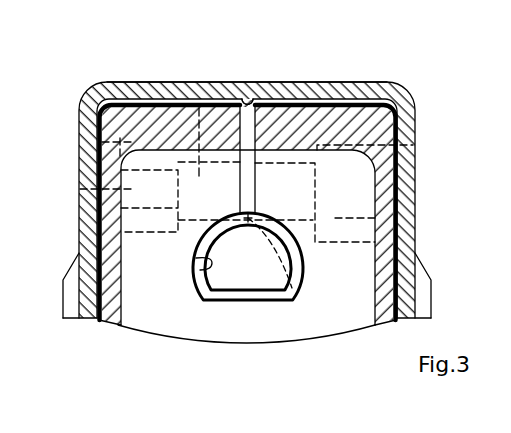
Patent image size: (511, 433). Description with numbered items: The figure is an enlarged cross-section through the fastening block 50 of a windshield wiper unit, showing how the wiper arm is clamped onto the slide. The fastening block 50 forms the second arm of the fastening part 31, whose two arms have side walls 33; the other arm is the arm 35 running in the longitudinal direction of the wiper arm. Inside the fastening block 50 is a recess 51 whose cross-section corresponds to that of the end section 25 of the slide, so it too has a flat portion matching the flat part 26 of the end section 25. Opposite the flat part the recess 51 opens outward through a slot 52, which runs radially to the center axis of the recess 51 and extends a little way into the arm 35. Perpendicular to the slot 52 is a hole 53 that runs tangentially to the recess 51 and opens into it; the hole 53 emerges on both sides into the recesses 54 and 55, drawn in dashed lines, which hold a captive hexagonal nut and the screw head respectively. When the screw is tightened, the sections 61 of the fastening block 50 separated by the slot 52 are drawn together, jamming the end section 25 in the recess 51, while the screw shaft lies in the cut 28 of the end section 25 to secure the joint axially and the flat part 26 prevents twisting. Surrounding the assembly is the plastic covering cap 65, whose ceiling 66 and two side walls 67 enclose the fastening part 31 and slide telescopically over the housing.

The end section 25 is at (220, 293).
The flat part 26 is at (237, 295).
The cut 28 is at (297, 283).
The fastening part 31 is at (413, 148).
The side walls 33 is at (97, 231).
The arm 35 is at (353, 123).
The fastening block 50 is at (346, 316).
The recess 51 is at (196, 273).
The slot 52 is at (252, 127).
The hole 53 is at (202, 84).
The recess 54 is at (78, 190).
The recess 55 is at (398, 220).
The sections 61 is at (228, 135).
The covering cap 65 is at (145, 80).
The ceiling 66 is at (328, 82).
The side walls 67 is at (80, 145).